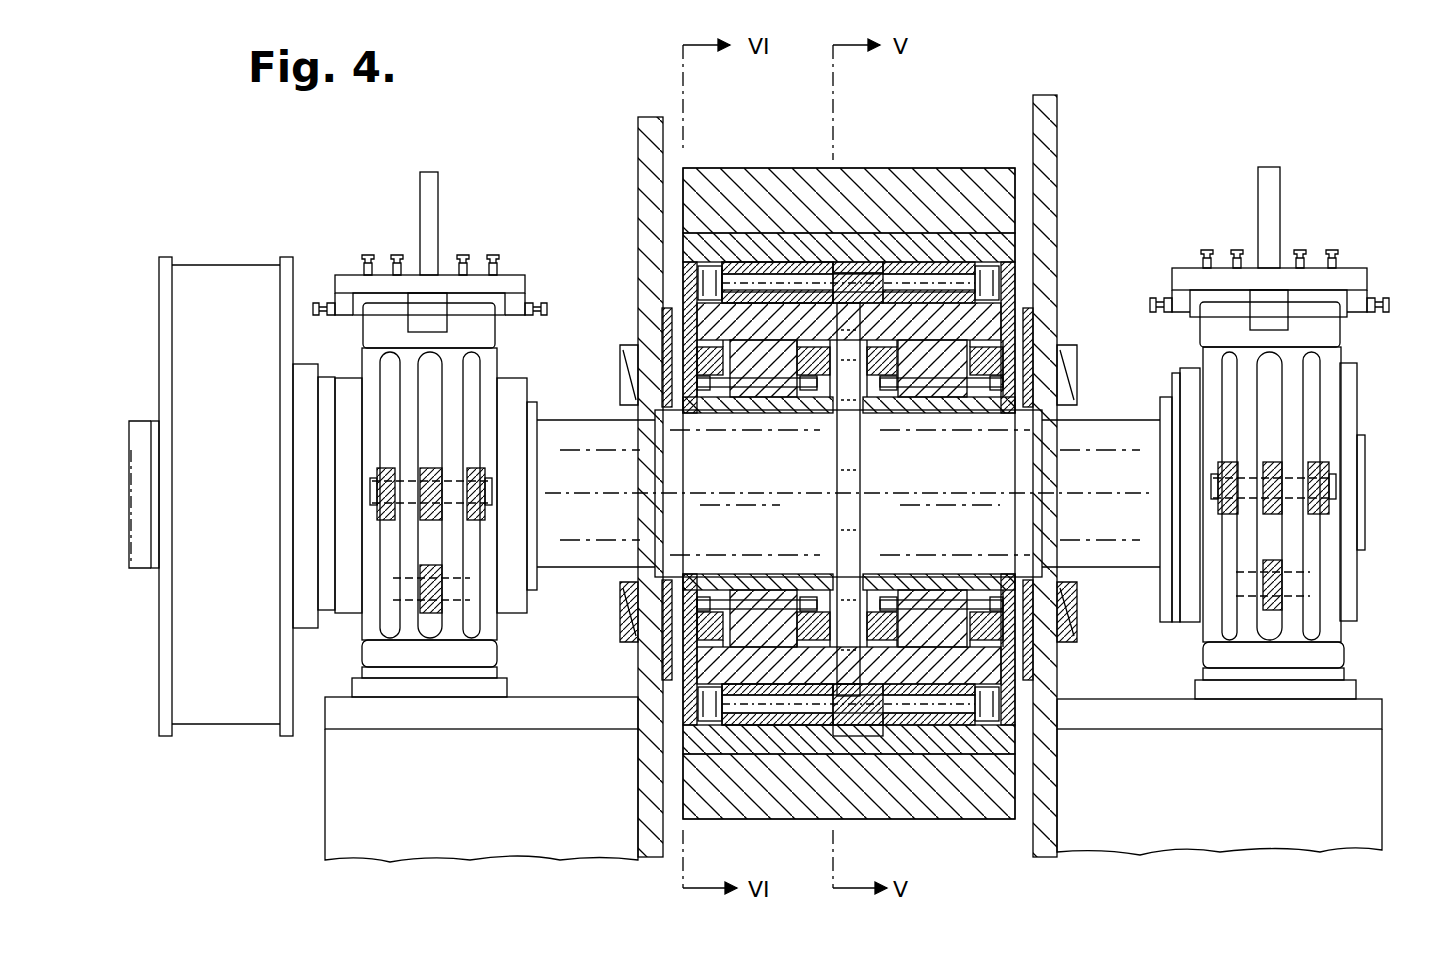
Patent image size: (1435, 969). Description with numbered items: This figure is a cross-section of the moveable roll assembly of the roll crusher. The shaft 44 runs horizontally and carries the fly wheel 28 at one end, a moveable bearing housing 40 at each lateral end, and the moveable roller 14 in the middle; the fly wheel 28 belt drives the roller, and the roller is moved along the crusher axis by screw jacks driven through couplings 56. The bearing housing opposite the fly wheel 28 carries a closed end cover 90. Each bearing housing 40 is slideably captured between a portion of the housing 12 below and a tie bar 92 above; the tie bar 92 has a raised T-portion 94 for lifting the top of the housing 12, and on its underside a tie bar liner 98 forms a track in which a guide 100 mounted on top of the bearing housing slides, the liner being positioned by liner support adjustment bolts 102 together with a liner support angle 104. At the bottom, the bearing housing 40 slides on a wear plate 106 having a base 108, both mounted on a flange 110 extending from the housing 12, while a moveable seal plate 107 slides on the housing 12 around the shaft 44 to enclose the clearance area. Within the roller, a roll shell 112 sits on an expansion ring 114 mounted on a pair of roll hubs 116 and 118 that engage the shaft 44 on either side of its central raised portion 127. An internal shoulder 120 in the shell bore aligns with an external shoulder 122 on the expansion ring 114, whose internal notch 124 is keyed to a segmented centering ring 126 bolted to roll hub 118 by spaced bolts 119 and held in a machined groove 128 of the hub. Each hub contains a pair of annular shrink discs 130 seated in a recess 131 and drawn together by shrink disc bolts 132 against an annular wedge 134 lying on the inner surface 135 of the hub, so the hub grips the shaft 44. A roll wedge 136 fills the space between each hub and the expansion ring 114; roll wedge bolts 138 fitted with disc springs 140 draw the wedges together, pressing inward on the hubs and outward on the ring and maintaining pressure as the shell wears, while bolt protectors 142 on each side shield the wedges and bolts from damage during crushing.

The housing 12 is at (640, 140).
The moveable roller 14 is at (715, 165).
The fly wheel 28 is at (159, 370).
The moveable bearing housing 40 is at (495, 378).
The shaft 44 is at (130, 465).
The couplings 56 is at (415, 470).
The closed end cover 90 is at (1366, 520).
The tie bar 92 is at (445, 280).
The raised T-portion 94 is at (432, 178).
The tie bar liner 98 is at (478, 302).
The guide 100 is at (425, 315).
The liner support adjustment bolts 102 is at (368, 253).
The liner support angle 104 is at (360, 300).
The wear plate 106 is at (455, 688).
The thin plate 107 is at (625, 380).
The base 108 is at (380, 705).
The flange 110 is at (405, 735).
The roll shell 112 is at (975, 175).
The expansion ring 114 is at (1012, 245).
The roll hub 116 is at (700, 330).
The roll hub 118 is at (1010, 325).
The spaced bolts 119 is at (858, 700).
The internal shoulder 120 is at (860, 262).
The external shoulder 122 is at (822, 265).
The internal notch 124 is at (850, 740).
The centering ring 126 is at (866, 275).
The central raised portion 127 is at (860, 478).
The machined groove 128 is at (780, 720).
The annular shrink discs 130 is at (960, 360).
The recess 131 is at (700, 660).
The shrink disc bolts 132 is at (1010, 395).
The annular wedge 134 is at (725, 395).
The inner surface 135 is at (930, 412).
The roll wedge 136 is at (700, 710).
The roll wedge bolts 138 is at (1000, 250).
The disc springs 140 is at (718, 265).
The bolt protectors 142 is at (698, 284).